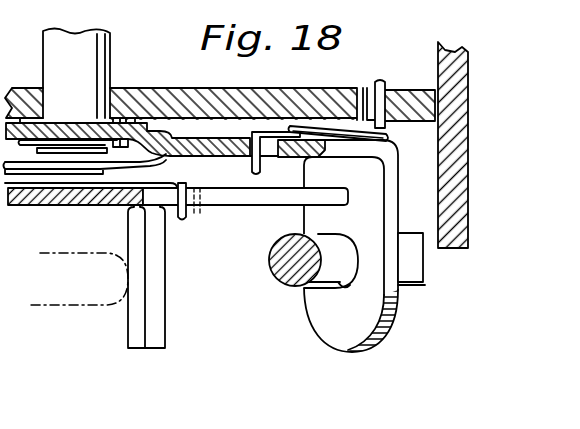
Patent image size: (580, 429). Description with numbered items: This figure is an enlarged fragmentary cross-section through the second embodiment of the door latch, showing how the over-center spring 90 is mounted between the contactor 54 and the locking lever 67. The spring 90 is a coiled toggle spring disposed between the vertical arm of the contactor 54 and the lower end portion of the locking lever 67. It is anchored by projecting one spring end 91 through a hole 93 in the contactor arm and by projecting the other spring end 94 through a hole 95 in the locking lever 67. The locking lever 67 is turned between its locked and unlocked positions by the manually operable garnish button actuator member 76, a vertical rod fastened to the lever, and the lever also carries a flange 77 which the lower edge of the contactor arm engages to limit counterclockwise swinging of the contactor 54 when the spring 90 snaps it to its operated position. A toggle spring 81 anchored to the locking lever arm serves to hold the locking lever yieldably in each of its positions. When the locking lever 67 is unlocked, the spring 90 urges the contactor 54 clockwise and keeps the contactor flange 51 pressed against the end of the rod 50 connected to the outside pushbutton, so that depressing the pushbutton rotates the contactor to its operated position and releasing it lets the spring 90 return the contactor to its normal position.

The rod 50 is at (50, 306).
The contactor flange 51 is at (162, 316).
The contactor 54 is at (288, 190).
The locking lever 67 is at (201, 165).
The manually operable garnish button actuator member 76 is at (288, 281).
The flange of the locking lever 77 is at (325, 327).
The toggle spring 81 is at (327, 127).
The over-center spring 90 is at (60, 170).
The spring end 91 is at (194, 220).
The hole 93 is at (200, 213).
The spring end 94 is at (147, 117).
The hole 95 is at (183, 107).